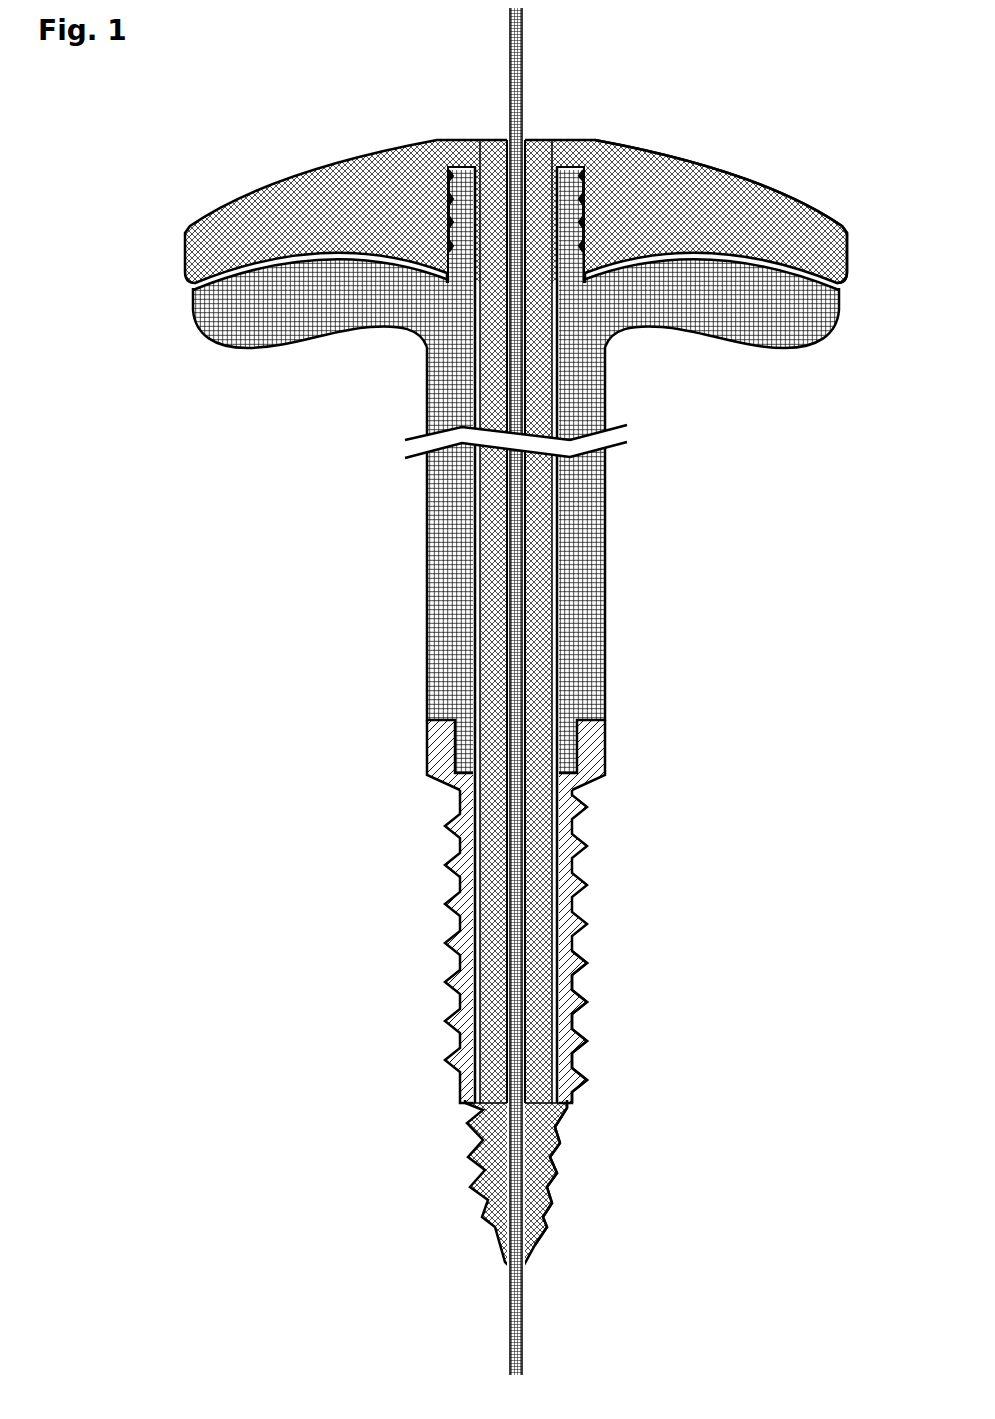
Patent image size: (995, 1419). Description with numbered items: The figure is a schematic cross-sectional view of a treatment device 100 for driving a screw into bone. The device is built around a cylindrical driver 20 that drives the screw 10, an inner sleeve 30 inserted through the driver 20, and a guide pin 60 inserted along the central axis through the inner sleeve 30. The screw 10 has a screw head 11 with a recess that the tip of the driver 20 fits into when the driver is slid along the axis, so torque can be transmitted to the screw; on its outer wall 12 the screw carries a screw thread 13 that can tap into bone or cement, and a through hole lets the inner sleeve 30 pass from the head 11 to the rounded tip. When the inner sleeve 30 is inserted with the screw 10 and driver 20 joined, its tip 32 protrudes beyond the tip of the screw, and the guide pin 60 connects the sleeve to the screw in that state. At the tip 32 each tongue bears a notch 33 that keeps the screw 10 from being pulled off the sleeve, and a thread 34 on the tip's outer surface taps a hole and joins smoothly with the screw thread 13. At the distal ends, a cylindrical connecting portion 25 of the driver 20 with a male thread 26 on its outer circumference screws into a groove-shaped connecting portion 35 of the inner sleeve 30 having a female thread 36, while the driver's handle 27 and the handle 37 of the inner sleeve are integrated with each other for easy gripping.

The treatment device 100 is at (203, 102).
The screw 10 is at (631, 889).
The screw head 11 is at (590, 747).
The outer wall of screw 12 is at (565, 835).
The screw thread 13 is at (667, 990).
The driver 20 is at (585, 677).
The connecting portion with inner sleeve 25 is at (447, 170).
The male thread 26 is at (447, 246).
The driver's handle 27 is at (227, 315).
The inner sleeve 30 is at (540, 633).
The tip of inner sleeve 32 is at (628, 1182).
The notch 33 is at (563, 1108).
The thread at tip of inner sleeve 34 is at (623, 1194).
The connecting point with driver 35 is at (585, 142).
The female thread 36 is at (585, 246).
The handle of inner sleeve 37 is at (732, 220).
The guide pin 60 is at (516, 583).